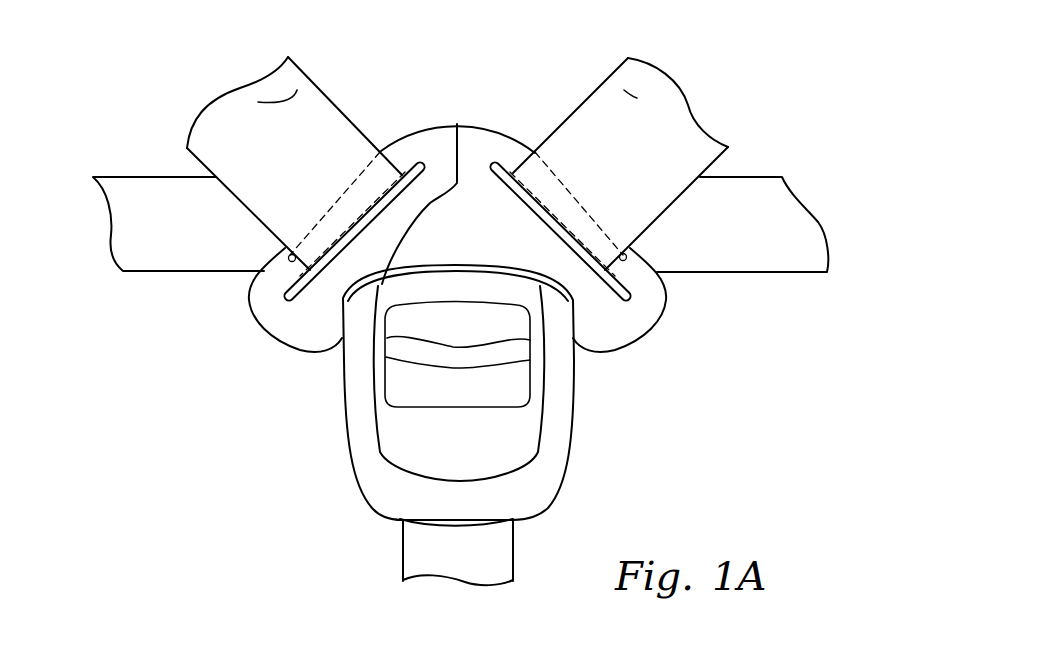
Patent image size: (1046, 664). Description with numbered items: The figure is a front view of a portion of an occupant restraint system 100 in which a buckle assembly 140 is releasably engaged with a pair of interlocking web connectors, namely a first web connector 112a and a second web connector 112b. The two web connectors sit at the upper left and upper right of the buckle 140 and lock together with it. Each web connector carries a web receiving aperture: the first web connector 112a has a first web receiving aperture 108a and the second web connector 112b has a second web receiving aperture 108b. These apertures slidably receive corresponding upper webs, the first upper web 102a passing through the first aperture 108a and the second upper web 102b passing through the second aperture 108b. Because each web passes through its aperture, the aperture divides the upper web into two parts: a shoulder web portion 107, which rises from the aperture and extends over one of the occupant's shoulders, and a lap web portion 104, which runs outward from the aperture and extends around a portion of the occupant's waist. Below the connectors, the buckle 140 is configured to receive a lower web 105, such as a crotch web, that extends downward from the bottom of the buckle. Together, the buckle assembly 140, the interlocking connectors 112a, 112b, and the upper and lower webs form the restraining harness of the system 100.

The occupant restraint system 100 is at (139, 117).
The first upper web 102a is at (322, 115).
The second upper web 102b is at (687, 143).
The lap web portion 104 is at (132, 232).
The lower web 105 is at (425, 557).
The shoulder web portion 107 is at (297, 90).
The first web receiving aperture 108a is at (268, 298).
The second web receiving aperture 108b is at (637, 286).
The first web connector 112a is at (308, 346).
The second web connector 112b is at (642, 315).
The buckle assembly 140 is at (560, 425).